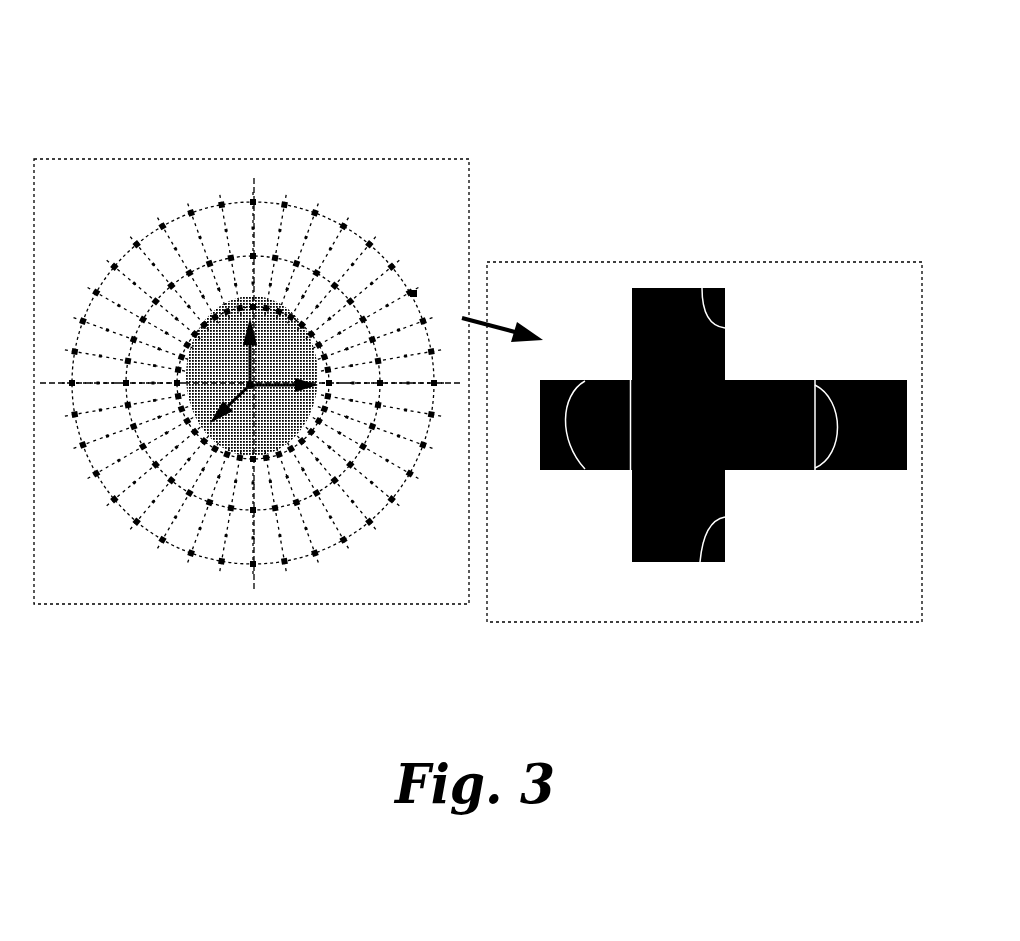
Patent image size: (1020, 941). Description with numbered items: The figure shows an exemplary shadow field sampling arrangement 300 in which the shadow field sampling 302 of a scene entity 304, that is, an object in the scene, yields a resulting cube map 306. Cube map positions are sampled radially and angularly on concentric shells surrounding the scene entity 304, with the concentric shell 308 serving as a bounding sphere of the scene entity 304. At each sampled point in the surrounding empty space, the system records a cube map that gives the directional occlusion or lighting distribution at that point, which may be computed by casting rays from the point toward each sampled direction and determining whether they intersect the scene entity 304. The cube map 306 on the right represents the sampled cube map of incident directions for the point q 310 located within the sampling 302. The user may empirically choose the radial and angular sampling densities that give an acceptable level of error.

The cube map sampling diagram 300 is at (297, 40).
The shadow field sampling 302 is at (140, 158).
The scene entity 304 is at (257, 408).
The cube map 306 is at (860, 262).
The concentric shell 308 is at (180, 447).
The point q 310 is at (413, 293).